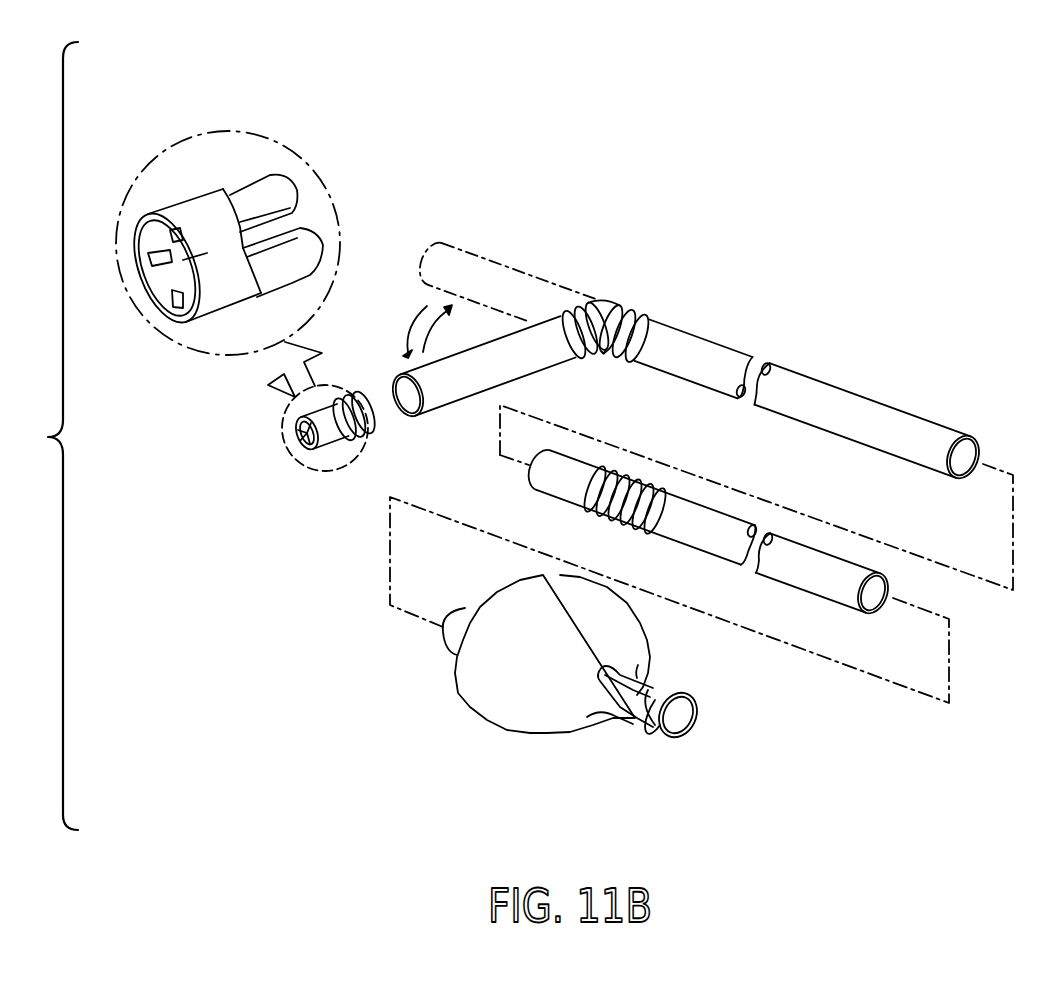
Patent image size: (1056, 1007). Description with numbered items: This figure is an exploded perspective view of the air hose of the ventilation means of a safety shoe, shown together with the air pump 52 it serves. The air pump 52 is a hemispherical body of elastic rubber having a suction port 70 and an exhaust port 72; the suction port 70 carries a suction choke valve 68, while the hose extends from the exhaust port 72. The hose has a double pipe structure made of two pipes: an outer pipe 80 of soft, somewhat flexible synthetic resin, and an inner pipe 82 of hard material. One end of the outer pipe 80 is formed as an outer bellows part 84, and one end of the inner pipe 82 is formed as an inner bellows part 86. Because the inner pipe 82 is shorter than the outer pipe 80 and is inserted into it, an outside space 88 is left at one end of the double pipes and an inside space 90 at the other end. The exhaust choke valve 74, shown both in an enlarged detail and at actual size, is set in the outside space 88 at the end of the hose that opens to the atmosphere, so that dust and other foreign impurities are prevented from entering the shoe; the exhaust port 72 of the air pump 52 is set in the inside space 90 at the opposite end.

The air pump 52 is at (462, 703).
The suction choke valve 68 is at (677, 718).
The suction port 70 is at (649, 691).
The exhaust port 72 is at (449, 609).
The exhaust choke valve 74 is at (273, 138).
The outer pipe 80 is at (945, 437).
The inner pipe 82 is at (866, 570).
The outer bellows part 84 is at (605, 300).
The inner bellows part 86 is at (612, 518).
The outside space 88 is at (416, 410).
The inside space 90 is at (967, 460).